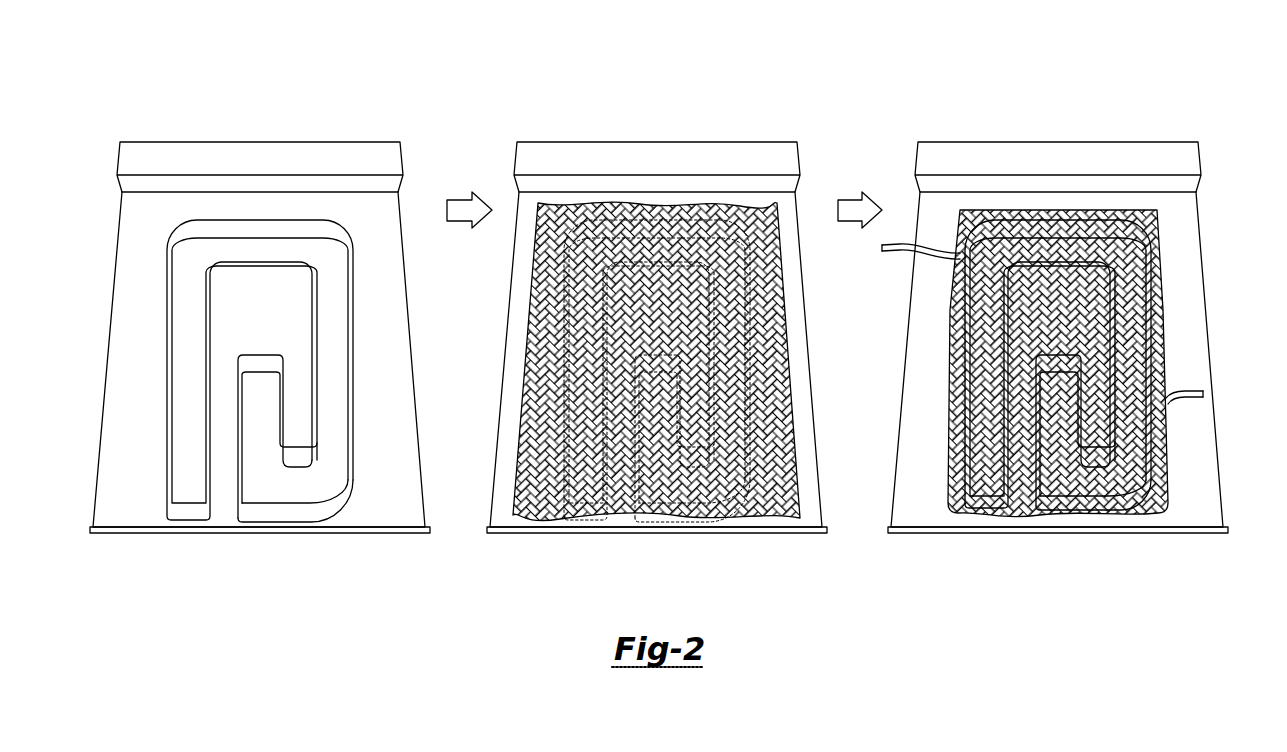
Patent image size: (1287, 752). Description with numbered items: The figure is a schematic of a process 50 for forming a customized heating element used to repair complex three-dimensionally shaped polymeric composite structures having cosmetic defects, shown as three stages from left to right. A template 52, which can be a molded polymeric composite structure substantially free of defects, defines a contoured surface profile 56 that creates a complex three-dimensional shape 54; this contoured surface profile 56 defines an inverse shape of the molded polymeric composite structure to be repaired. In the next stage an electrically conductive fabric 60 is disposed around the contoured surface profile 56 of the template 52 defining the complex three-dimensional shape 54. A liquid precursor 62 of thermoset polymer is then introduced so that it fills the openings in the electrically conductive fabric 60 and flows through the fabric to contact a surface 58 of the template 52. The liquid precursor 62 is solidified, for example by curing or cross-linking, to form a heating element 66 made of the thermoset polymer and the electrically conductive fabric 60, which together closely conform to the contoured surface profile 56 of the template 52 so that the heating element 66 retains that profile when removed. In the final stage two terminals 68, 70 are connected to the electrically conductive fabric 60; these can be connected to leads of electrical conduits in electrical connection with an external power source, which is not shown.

The process 50 is at (152, 122).
The template 52 is at (287, 148).
The complex three-dimensional shape 54 is at (327, 272).
The contoured surface profile 56 is at (270, 408).
The surface 58 is at (313, 490).
The electrically conductive fabric 60 is at (778, 228).
The liquid precursor 62 is at (1007, 220).
The heating element 66 is at (1170, 343).
The terminal 68 is at (905, 242).
The terminal 70 is at (1198, 408).